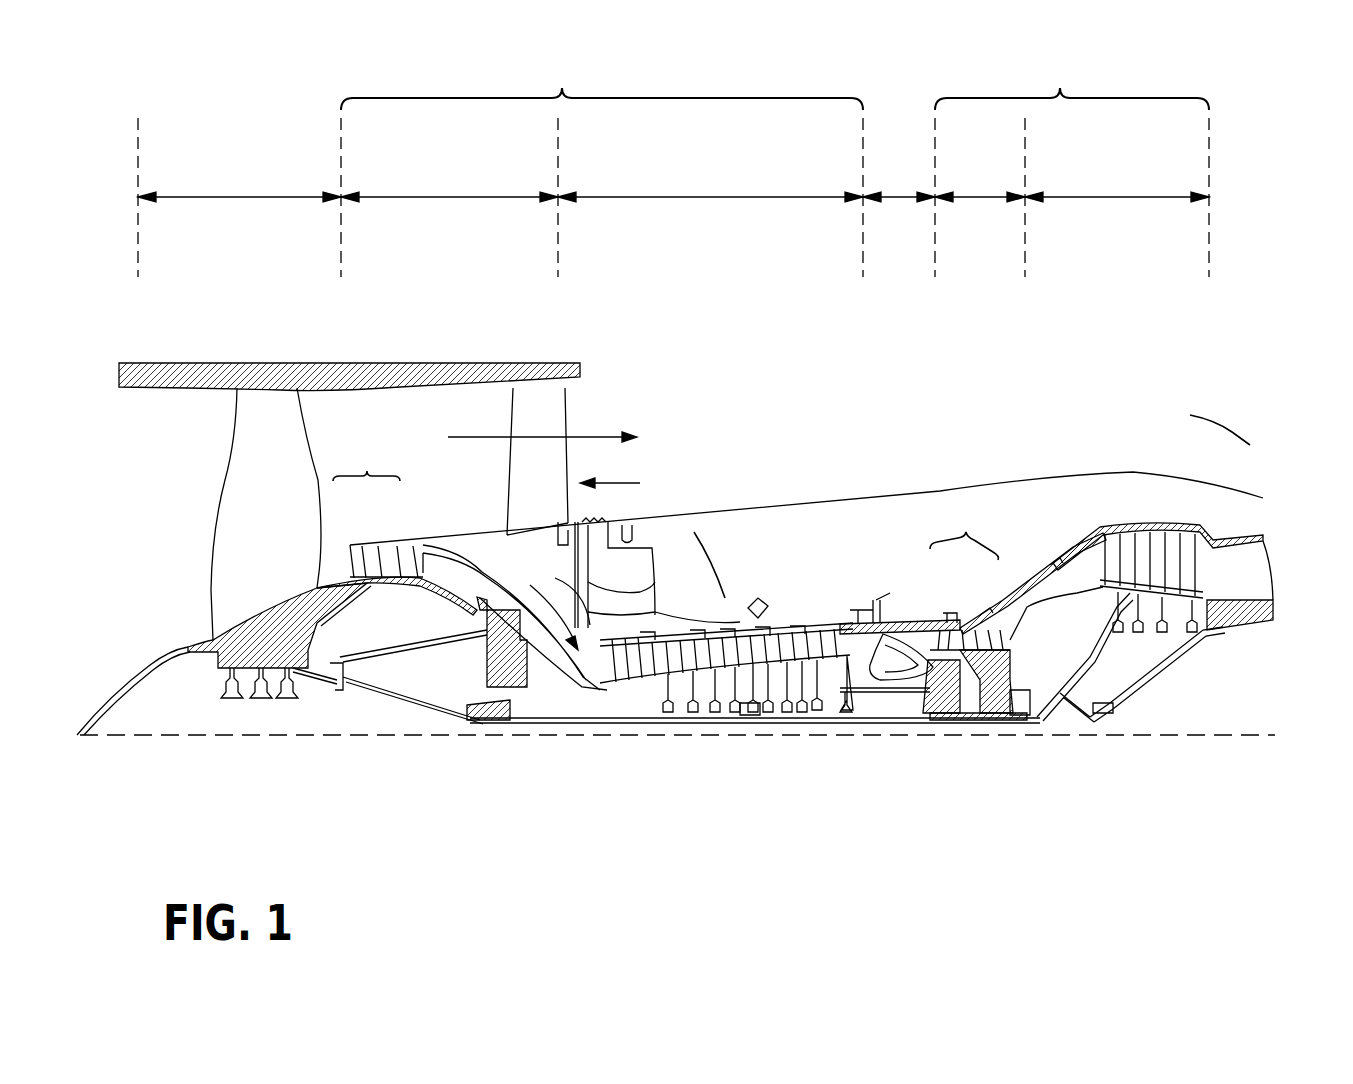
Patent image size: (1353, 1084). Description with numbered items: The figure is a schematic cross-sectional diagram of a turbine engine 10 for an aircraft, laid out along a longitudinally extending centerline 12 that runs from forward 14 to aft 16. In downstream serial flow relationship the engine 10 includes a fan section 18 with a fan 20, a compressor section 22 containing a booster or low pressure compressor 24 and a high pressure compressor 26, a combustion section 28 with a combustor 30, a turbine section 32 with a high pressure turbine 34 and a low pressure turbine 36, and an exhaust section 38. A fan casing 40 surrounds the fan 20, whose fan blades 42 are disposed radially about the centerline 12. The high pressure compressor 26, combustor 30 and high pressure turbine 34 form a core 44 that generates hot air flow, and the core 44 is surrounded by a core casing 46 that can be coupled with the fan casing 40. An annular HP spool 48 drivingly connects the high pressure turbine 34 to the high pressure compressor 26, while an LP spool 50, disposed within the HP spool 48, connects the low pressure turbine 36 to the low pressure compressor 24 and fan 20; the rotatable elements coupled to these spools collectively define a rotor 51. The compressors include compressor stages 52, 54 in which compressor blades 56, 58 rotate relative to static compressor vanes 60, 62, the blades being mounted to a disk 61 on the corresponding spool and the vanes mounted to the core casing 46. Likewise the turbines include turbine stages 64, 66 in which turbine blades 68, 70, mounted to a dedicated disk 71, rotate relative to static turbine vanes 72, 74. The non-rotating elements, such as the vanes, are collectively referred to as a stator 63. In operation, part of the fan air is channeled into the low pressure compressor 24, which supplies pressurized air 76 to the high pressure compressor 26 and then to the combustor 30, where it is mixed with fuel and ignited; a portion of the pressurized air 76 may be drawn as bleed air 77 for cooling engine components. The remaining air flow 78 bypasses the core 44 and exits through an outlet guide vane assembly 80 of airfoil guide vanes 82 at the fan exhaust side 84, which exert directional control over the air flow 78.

The turbine engine 10 is at (893, 353).
The centerline 12 is at (238, 742).
The forward 14 is at (90, 500).
The aft 16 is at (1298, 584).
The fan section 18 is at (239, 186).
The fan 20 is at (172, 575).
The compressor section 22 is at (602, 84).
The low pressure compressor 24 is at (449, 186).
The high pressure compressor 26 is at (710, 186).
The combustion section 28 is at (899, 181).
The combustor 30 is at (895, 645).
The turbine section 32 is at (1072, 84).
The high pressure turbine 34 is at (980, 186).
The low pressure turbine 36 is at (1117, 186).
The exhaust section 38 is at (1285, 535).
The fan casing 40 is at (380, 364).
The fan blades 42 is at (294, 440).
The core 44 is at (845, 532).
The core casing 46 is at (1075, 545).
The HP shaft or spool 48 is at (855, 708).
The LP shaft or spool 50 is at (490, 724).
The rotor 51 is at (748, 733).
The compressor stages 52 is at (409, 513).
The compressor stages 54 is at (726, 607).
The compressor blades 56 is at (377, 546).
The compressor blades 58 is at (628, 625).
The static compressor vanes 60 is at (352, 545).
The disk 61 is at (370, 598).
The static compressor vanes 62 is at (645, 620).
The stator 63 is at (1140, 512).
The turbine stages 64 is at (975, 615).
The turbine stages 66 is at (1158, 521).
The turbine blades 68 is at (962, 620).
The turbine blades 70 is at (1190, 540).
The disk 71 is at (952, 715).
The static turbine vanes 72 is at (935, 620).
The static turbine vanes 74 is at (1180, 540).
The pressurized air 76 is at (560, 590).
The bleed air 77 is at (740, 612).
The air flow 78 is at (448, 437).
The outlet guide vane assembly 80 is at (638, 476).
The airfoil guide vanes 82 is at (520, 475).
The fan exhaust side 84 is at (618, 392).